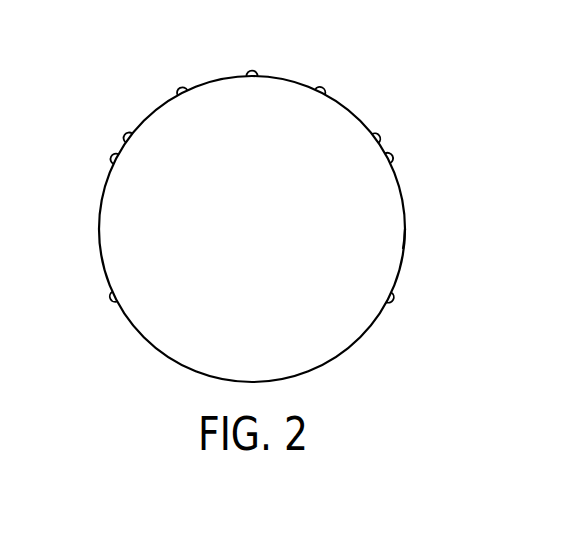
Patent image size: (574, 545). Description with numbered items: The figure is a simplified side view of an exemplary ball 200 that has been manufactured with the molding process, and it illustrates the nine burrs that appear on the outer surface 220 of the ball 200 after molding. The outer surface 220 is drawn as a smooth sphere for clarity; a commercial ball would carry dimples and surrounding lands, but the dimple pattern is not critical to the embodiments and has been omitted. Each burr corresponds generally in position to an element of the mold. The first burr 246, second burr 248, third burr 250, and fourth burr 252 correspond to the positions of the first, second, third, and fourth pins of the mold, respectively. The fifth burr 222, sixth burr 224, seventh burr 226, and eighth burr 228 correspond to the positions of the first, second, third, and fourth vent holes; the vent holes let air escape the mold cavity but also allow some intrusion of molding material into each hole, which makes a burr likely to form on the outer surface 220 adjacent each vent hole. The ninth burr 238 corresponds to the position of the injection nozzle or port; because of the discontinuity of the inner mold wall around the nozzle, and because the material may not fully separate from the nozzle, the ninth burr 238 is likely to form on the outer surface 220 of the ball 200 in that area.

The ball 200 is at (388, 78).
The outer surface 220 is at (405, 239).
The fifth burr 222 is at (380, 134).
The sixth burr 224 is at (323, 87).
The seventh burr 226 is at (178, 89).
The eighth burr 228 is at (125, 134).
The ninth burr 238 is at (249, 71).
The first burr 246 is at (394, 302).
The second burr 248 is at (394, 155).
The third burr 250 is at (112, 158).
The fourth burr 252 is at (109, 303).